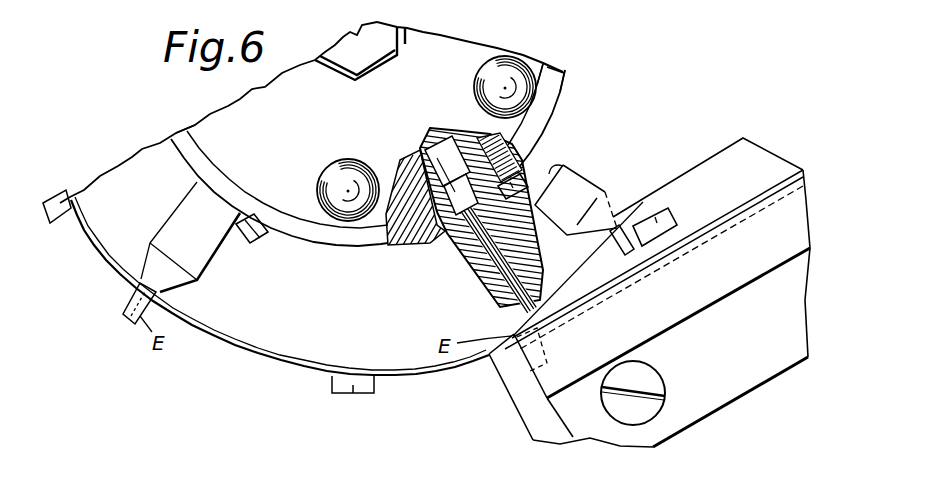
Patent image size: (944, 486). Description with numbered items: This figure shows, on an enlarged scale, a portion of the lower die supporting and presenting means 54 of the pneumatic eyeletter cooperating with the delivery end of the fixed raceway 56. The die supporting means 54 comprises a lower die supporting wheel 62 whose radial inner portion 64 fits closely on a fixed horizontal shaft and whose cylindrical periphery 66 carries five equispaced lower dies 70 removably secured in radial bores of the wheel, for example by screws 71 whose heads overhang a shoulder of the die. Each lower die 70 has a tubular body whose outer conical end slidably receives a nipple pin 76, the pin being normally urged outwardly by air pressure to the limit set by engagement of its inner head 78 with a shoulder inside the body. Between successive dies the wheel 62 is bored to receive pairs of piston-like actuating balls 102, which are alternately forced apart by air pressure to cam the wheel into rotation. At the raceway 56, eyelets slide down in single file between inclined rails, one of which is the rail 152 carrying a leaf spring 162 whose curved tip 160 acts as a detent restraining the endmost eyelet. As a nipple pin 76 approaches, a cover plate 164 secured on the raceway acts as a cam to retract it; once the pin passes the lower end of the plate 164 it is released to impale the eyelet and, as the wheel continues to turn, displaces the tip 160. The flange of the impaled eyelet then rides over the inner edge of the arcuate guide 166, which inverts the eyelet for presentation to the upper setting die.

The lower die supporting and presenting means 54 is at (610, 122).
The raceway 56 is at (793, 136).
The lower die supporting wheel 62 is at (565, 72).
The radial inner portion 64 is at (282, 80).
The cylindrical periphery 66 is at (578, 80).
The lower die 70 is at (203, 254).
The screw 71 is at (530, 178).
The nipple pin 76 is at (128, 301).
The inner head 78 is at (427, 148).
The actuating ball 102 is at (492, 62).
The rail 152 is at (740, 356).
The curved tip 160 is at (515, 373).
The leaf spring 162 is at (706, 283).
The cover plate 164 is at (580, 284).
The arcuate guide 166 is at (264, 360).